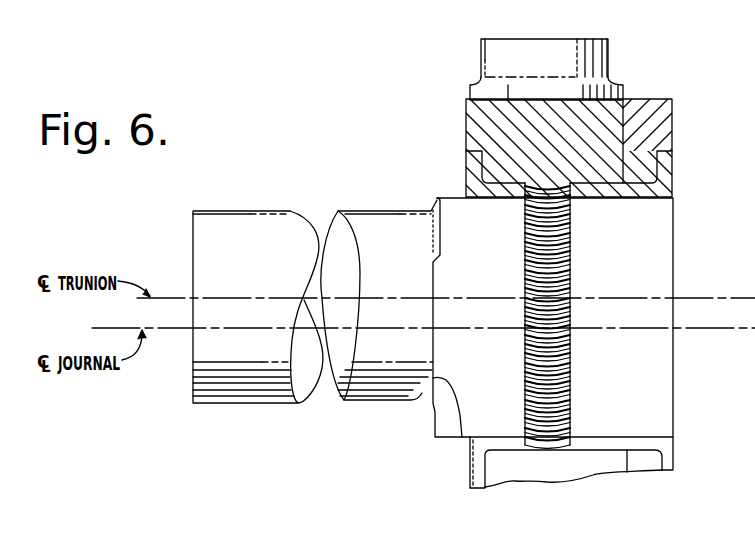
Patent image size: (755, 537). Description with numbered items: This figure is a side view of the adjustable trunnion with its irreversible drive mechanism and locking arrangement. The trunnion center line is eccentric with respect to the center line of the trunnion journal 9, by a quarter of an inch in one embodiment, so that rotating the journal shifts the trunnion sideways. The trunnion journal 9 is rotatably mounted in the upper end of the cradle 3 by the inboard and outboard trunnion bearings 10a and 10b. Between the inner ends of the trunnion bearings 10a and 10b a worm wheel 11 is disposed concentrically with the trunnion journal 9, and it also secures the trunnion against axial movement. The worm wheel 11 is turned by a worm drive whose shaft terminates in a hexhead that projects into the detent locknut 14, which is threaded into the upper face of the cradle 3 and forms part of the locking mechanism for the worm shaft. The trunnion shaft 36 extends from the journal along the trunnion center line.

The retainer plate 3 is at (660, 124).
The body / journal housing 9 is at (653, 380).
The lug of retainer plate 10a is at (667, 167).
The lug of retainer plate 10b is at (468, 173).
The bolt 11 is at (572, 308).
The nut 14 is at (500, 60).
The trunnion shaft 36 is at (257, 190).